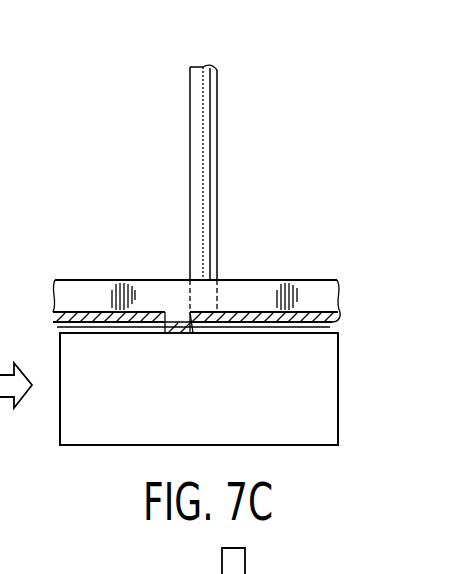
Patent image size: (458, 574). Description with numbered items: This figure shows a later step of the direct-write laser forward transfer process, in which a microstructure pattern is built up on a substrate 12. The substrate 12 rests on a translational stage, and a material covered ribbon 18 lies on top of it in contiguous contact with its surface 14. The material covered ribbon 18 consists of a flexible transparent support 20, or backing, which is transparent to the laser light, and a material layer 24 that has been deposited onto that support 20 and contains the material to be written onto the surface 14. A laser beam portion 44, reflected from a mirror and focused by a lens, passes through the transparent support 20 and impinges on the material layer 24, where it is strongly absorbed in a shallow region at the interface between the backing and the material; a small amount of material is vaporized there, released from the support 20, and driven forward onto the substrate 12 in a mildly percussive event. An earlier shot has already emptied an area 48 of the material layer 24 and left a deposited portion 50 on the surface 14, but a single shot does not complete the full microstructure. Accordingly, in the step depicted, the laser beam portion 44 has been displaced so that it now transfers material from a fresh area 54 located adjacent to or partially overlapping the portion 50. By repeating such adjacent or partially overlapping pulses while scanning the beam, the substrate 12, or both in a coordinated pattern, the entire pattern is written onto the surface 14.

The substrate 12 is at (317, 427).
The surface 14 is at (332, 328).
The material covered ribbon 18 is at (321, 244).
The flexible transparent support 20 is at (243, 292).
The material layer 24 is at (336, 308).
The laser beam portion 44 is at (190, 142).
The area 48 is at (168, 312).
The portion of the material 50 is at (166, 330).
The fresh area 54 is at (205, 322).